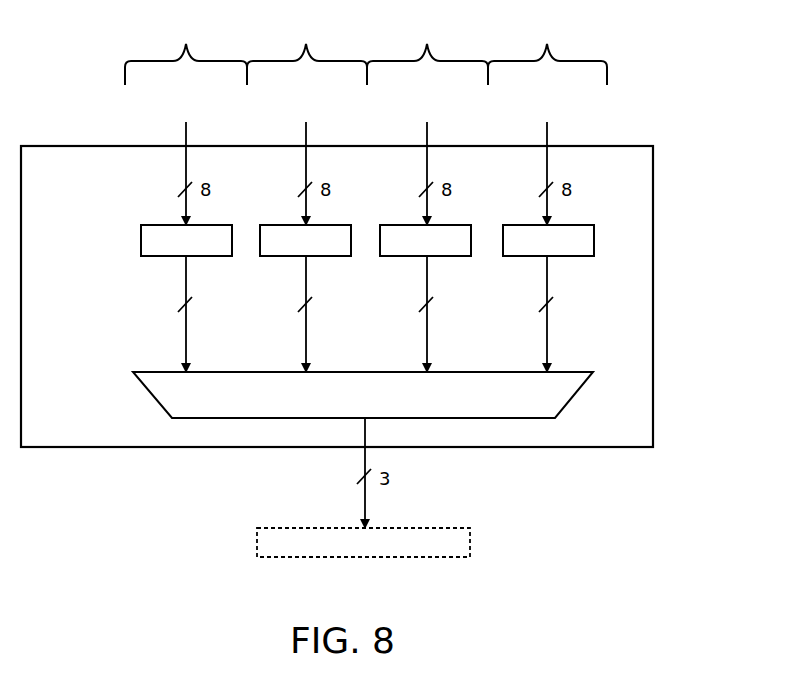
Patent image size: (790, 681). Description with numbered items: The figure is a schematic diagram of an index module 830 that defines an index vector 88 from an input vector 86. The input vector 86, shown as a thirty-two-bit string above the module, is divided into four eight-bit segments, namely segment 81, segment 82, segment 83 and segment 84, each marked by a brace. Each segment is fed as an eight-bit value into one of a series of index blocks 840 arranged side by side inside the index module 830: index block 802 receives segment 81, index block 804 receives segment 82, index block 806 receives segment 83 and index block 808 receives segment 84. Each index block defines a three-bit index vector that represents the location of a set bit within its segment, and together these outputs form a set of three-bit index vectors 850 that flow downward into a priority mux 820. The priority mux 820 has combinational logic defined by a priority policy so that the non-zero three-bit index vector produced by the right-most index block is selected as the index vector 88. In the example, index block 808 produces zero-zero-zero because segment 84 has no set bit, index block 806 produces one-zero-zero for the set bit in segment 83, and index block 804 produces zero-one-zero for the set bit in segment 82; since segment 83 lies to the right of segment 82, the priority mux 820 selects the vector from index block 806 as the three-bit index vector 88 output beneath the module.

The segment 81 is at (186, 44).
The segment 82 is at (307, 44).
The segment 83 is at (427, 44).
The segment 84 is at (547, 44).
The input vector 86 is at (627, 100).
The index module 830 is at (337, 296).
The index block 802 is at (186, 240).
The index block 804 is at (305, 240).
The index block 806 is at (425, 240).
The index block 808 is at (548, 240).
The series of index blocks 840 is at (438, 240).
The set of 3-bit index vectors 850 is at (587, 317).
The priority mux 820 is at (363, 395).
The index vector 88 is at (363, 542).